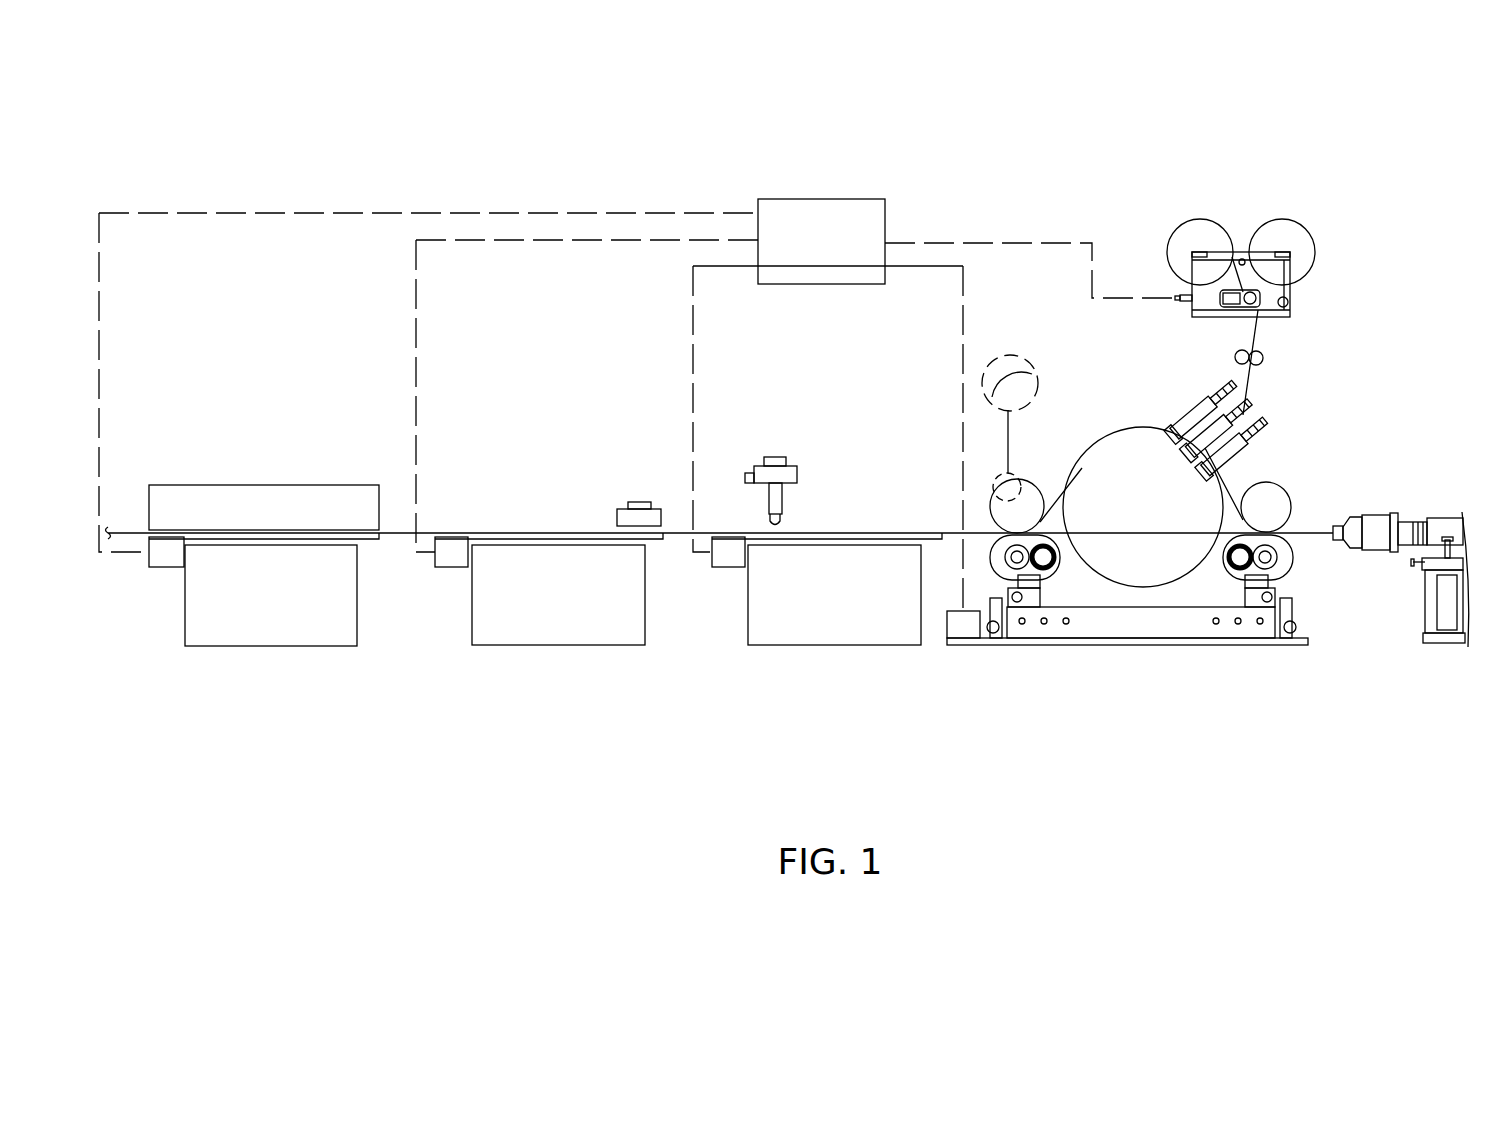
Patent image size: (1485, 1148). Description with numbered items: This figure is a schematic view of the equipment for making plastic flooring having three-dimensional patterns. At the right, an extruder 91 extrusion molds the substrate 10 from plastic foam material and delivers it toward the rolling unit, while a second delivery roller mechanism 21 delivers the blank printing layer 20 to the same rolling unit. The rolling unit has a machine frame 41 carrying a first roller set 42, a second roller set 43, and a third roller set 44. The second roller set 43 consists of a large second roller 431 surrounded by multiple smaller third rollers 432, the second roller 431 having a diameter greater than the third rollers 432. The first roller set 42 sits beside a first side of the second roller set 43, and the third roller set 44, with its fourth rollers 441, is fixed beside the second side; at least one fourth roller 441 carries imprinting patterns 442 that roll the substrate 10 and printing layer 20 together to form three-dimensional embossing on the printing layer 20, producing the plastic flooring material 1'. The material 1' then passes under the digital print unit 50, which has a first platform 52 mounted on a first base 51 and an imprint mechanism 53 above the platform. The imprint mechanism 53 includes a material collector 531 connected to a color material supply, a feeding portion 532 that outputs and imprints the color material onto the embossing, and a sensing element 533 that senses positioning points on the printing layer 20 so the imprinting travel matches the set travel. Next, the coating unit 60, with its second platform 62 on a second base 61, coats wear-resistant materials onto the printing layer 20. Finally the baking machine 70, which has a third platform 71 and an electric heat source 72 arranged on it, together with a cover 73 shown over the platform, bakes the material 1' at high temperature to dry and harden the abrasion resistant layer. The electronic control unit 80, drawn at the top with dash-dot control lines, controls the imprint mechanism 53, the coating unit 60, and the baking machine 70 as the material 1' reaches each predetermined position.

The electronic control unit 80 is at (830, 207).
The baking machine 70 is at (239, 463).
The cover of third processing unit 73 is at (262, 492).
The electric heat source 72 is at (215, 545).
The third platform 71 is at (270, 630).
The coating unit 60 is at (539, 477).
The second platform 62 is at (498, 545).
The second base 61 is at (568, 630).
The imprint mechanism 53 is at (748, 463).
The material collector 531 is at (797, 475).
The feeding portion 532 is at (827, 504).
The sensing element 533 is at (745, 480).
The digital print unit 50 is at (767, 496).
The first platform 52 is at (775, 545).
The first base 51 is at (818, 635).
The substrate 10 is at (1313, 540).
The plastic flooring material 1' is at (1078, 427).
The machine frame 41 is at (1137, 625).
The second roller 431 is at (1181, 585).
The second roller set 43 is at (1155, 415).
The third rollers 432 is at (1228, 480).
The third roller set 44 is at (994, 424).
The fourth rollers 441 is at (1025, 497).
The imprinting patterns 442 is at (1022, 372).
The first roller set 42 is at (1295, 515).
The second delivery roller mechanism 21 is at (1300, 310).
The printing layer 20 is at (1257, 337).
The extruder 91 is at (1375, 520).